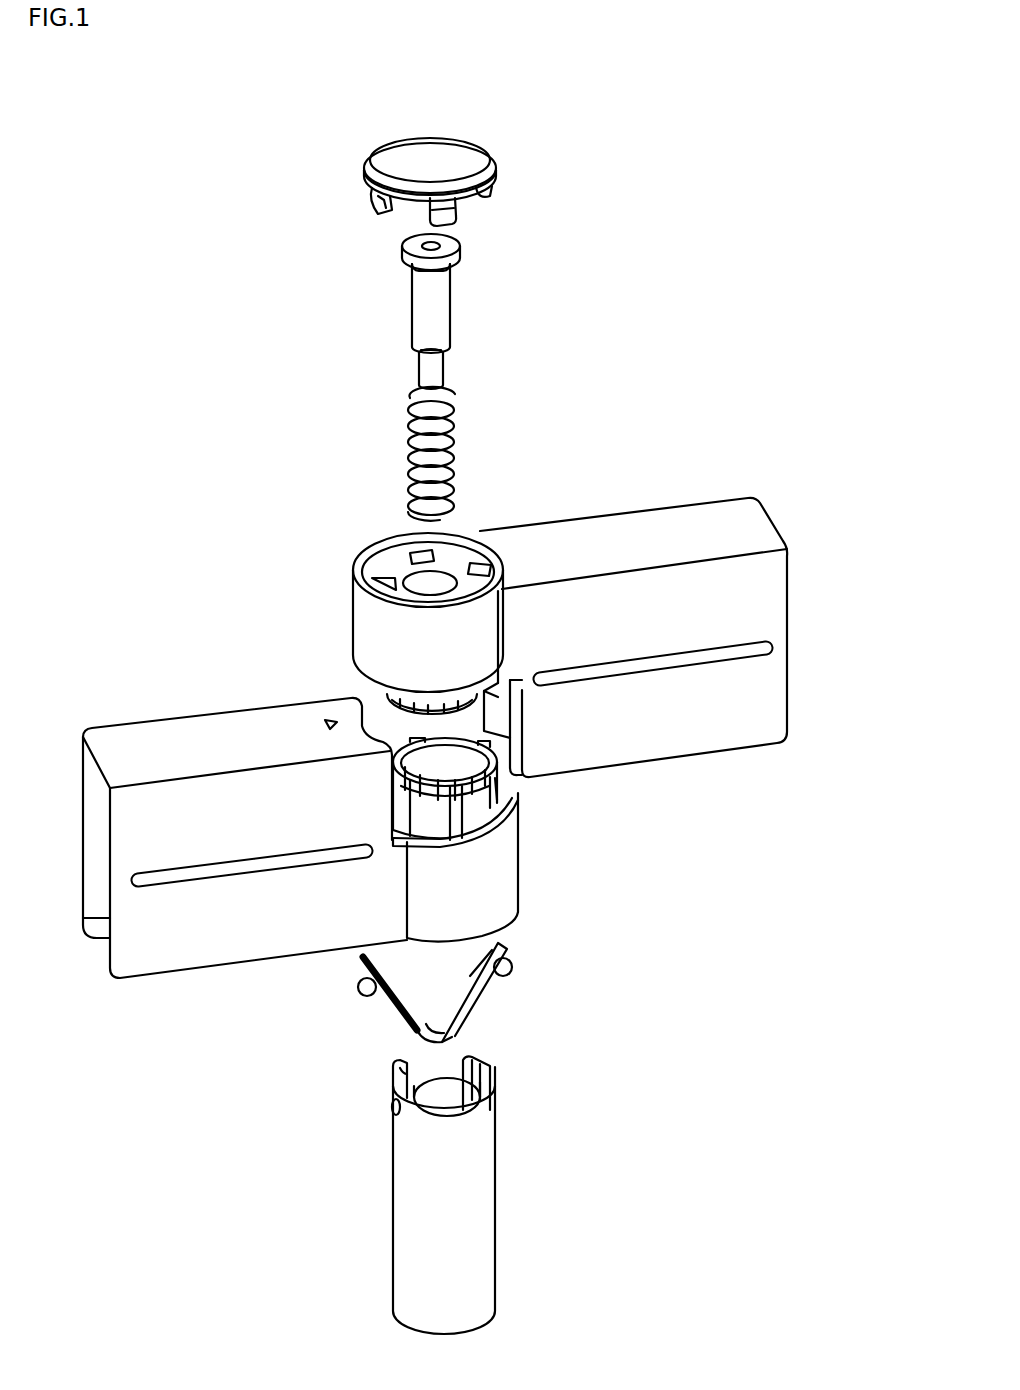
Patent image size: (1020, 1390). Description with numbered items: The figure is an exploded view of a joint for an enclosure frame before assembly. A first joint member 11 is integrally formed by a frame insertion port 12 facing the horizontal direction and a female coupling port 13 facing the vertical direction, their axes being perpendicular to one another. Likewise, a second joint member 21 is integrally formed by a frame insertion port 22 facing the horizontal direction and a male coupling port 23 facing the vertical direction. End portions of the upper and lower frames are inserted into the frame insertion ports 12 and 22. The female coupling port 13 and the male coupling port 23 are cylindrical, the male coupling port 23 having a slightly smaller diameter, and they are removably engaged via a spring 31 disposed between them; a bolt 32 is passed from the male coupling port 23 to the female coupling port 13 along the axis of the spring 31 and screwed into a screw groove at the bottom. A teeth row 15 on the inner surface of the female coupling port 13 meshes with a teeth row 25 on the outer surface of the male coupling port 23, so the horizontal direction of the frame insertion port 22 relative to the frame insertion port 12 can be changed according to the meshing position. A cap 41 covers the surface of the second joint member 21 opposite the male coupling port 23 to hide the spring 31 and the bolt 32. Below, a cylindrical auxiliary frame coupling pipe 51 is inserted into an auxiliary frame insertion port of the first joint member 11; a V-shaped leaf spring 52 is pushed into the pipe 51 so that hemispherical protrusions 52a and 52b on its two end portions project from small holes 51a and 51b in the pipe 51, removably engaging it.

The first joint member 11 is at (336, 838).
The frame insertion port 12 is at (125, 820).
The female coupling port 13 is at (481, 815).
The teeth row 15 is at (503, 777).
The second joint member 21 is at (565, 603).
The frame insertion port 22 is at (768, 592).
The male coupling port 23 is at (467, 708).
The teeth row 25 is at (392, 705).
The spring 31 is at (409, 436).
The bolt 32 is at (451, 312).
The cap 41 is at (458, 151).
The auxiliary frame coupling pipe 51 is at (453, 1195).
The small hole 51a is at (392, 1113).
The small hole 51b is at (503, 1097).
The V-shaped leaf spring 52 is at (442, 998).
The hemispherical protrusion 52a is at (358, 992).
The hemispherical protrusion 52b is at (513, 971).